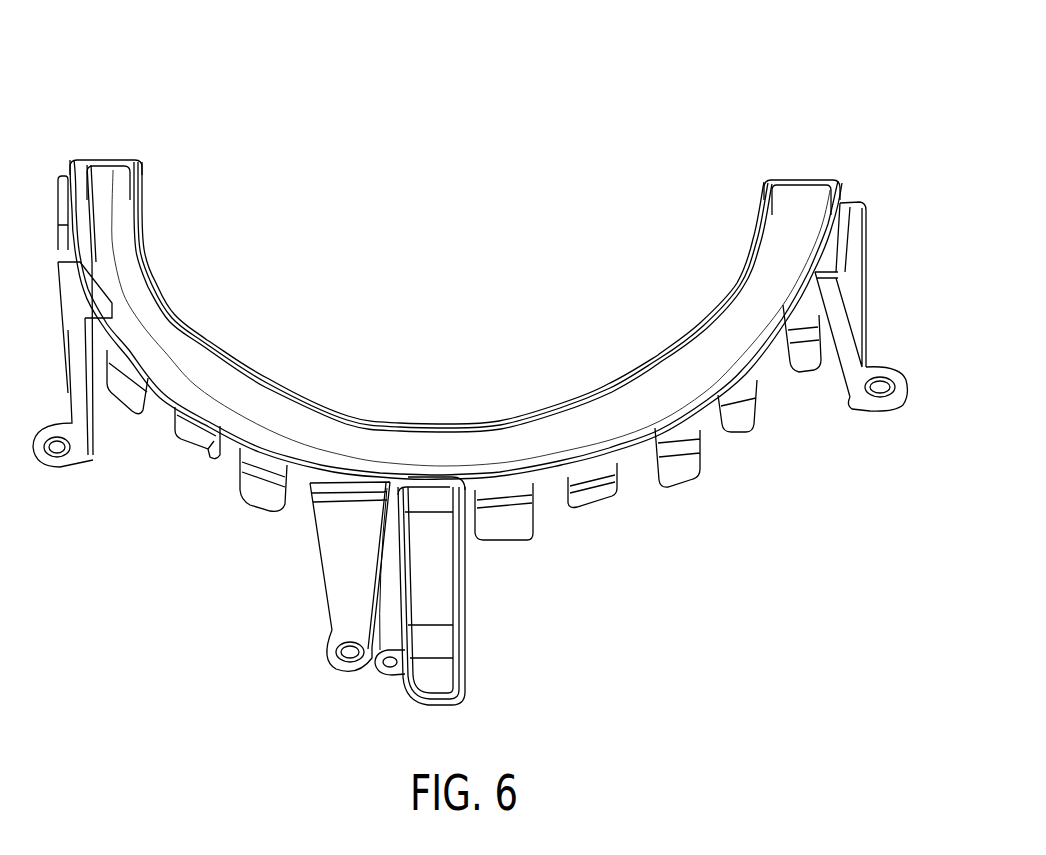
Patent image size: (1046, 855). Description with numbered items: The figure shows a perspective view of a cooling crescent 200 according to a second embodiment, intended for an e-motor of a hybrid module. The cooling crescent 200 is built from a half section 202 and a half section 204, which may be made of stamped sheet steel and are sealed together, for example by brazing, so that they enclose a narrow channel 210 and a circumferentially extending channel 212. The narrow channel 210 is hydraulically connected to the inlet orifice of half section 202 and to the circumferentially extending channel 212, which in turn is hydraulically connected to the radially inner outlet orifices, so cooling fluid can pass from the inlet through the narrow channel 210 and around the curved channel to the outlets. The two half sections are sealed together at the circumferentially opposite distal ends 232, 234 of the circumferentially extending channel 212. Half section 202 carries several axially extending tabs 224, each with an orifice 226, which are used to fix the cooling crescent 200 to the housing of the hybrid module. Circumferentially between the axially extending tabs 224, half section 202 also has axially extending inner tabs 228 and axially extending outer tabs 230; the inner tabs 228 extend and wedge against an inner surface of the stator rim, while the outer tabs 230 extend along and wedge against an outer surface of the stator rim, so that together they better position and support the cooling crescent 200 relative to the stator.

The cooling crescent 200 is at (99, 86).
The half section 202 is at (63, 360).
The half section 204 is at (218, 455).
The narrow channel 210 is at (452, 584).
The circumferentially extending channel 212 is at (485, 446).
The axially extending tabs 224 is at (334, 544).
The orifices 226 is at (334, 662).
The axially extending inner tabs 228 is at (750, 425).
The axially extending outer tabs 230 is at (696, 487).
The distal end 232 is at (107, 183).
The distal end 234 is at (793, 200).